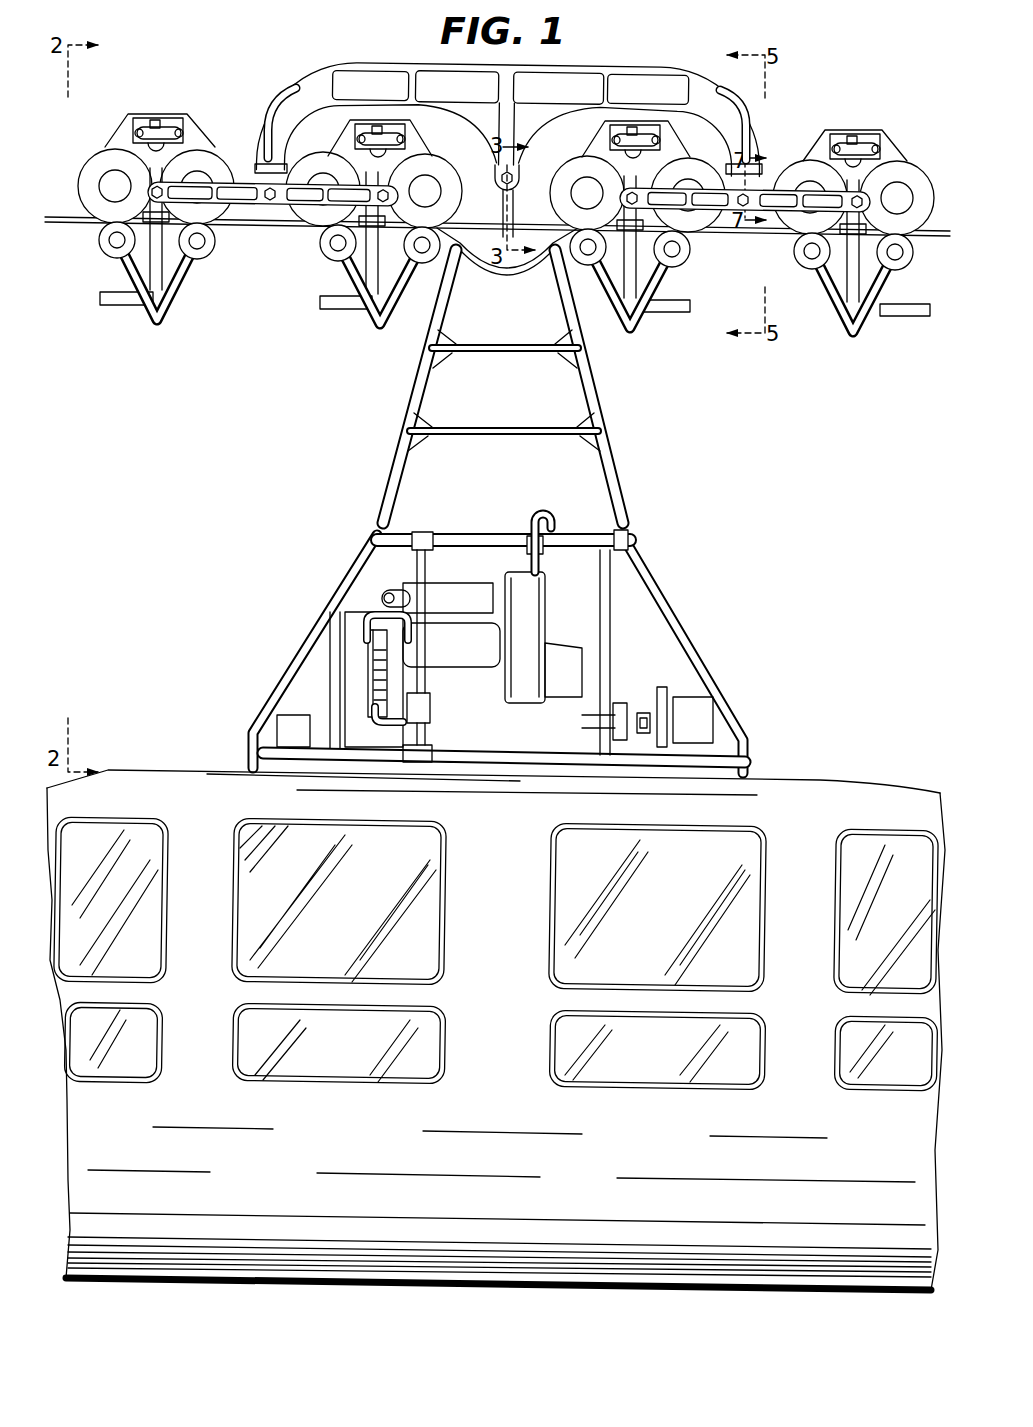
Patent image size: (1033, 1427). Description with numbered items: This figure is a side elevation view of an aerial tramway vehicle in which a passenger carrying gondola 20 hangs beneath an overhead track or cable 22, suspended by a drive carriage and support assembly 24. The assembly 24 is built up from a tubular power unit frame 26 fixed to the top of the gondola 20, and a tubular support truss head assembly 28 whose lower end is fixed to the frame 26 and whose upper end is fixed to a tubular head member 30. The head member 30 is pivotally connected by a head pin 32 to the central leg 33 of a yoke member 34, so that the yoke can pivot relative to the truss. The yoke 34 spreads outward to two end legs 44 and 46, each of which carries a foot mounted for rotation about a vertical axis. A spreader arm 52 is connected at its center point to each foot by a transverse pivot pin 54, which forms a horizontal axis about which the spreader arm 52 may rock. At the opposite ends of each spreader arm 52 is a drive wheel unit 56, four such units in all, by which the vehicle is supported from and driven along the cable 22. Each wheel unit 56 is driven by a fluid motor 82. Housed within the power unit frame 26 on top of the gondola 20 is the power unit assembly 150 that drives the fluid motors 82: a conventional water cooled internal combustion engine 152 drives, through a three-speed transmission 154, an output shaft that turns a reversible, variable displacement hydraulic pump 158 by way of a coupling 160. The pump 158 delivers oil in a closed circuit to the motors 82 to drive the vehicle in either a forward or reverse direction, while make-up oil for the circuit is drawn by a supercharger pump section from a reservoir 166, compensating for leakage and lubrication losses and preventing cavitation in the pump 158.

The passenger carrying gondola 20 is at (822, 780).
The overhead track or cable 22 is at (85, 224).
The drive carriage and support assembly 24 is at (780, 395).
The tubular power unit frame 26 is at (695, 650).
The tubular support truss head assembly 28 is at (408, 410).
The tubular head member 30 is at (499, 204).
The head pin 32 is at (513, 186).
The central leg 33 is at (520, 171).
The yoke member 34 is at (540, 78).
The end leg 44 is at (284, 166).
The end leg 46 is at (757, 141).
The spreader arm 52 is at (273, 205).
The transverse pivot pin 54 is at (262, 178).
The drive wheel unit 56 is at (198, 120).
The fluid motor 82 is at (158, 122).
The power unit assembly 150 is at (630, 605).
The internal combustion engine 152 is at (478, 701).
The 3-speed transmission 154 is at (570, 731).
The reversible, variable displacement hydraulic pump 158 is at (700, 713).
The coupling 160 is at (643, 708).
The reservoir 166 is at (288, 718).